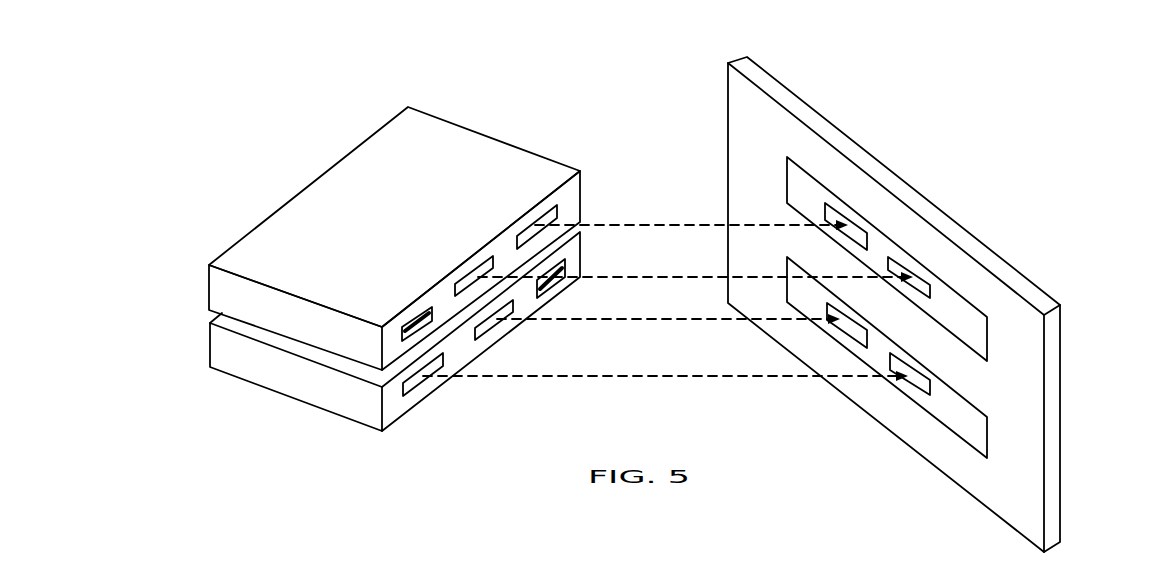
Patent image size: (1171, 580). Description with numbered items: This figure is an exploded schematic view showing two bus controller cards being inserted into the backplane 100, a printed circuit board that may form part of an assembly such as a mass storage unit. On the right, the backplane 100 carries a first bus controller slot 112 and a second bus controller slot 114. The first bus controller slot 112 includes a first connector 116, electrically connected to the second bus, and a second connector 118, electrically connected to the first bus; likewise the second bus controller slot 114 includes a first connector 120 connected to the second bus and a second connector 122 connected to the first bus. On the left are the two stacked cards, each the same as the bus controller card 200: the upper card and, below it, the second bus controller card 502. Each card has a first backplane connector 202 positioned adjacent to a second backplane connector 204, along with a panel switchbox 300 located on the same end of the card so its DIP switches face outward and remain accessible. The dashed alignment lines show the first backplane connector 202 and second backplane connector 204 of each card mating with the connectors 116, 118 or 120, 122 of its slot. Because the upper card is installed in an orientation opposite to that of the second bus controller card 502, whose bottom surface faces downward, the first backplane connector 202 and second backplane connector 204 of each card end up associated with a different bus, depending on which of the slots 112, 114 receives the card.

The backplane 100 is at (1012, 282).
The first bus controller slot 112 is at (988, 340).
The second bus controller slot 114 is at (988, 438).
The first connector 116 is at (851, 232).
The second connector 118 is at (918, 281).
The first connector 120 is at (853, 333).
The second connector 122 is at (920, 382).
The bus controller card 200 is at (394, 238).
The first backplane connector 202 is at (467, 280).
The second backplane connector 204 is at (528, 223).
The panel switchbox 300 is at (425, 313).
The second bus controller card 502 is at (315, 406).